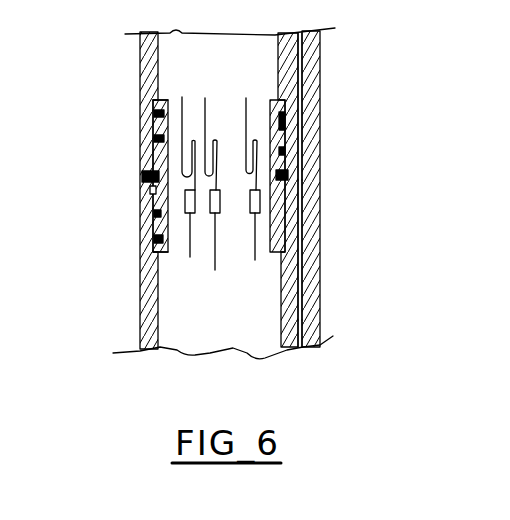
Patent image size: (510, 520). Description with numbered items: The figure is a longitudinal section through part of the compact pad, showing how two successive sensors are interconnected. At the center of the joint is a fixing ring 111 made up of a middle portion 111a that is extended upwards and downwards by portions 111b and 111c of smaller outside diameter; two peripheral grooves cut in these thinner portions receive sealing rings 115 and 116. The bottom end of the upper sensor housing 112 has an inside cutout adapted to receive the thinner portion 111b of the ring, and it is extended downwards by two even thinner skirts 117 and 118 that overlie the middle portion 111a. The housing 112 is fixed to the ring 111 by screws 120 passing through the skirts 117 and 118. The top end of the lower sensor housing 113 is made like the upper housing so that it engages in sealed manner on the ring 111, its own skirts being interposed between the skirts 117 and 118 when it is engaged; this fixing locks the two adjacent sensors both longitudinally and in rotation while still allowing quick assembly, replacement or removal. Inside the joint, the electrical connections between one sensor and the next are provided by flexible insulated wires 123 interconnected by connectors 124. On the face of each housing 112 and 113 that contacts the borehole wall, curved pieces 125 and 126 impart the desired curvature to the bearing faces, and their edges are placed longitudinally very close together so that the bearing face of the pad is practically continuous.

The fixing ring 111 is at (300, 100).
The middle portion 111a is at (152, 167).
The upper thinner portion 111b is at (152, 104).
The lower thinner portion 111c is at (150, 250).
The sensor housing 112 is at (319, 40).
The sensor housing 113 is at (300, 330).
The sealing ring 115 is at (154, 140).
The sealing ring 116 is at (148, 240).
The skirt 117 is at (145, 190).
The skirt 118 is at (286, 186).
The screw 120 is at (144, 179).
The flexible insulated wire 123 is at (184, 97).
The connector 124 is at (200, 211).
The curved piece 125 is at (308, 80).
The curved piece 126 is at (306, 288).